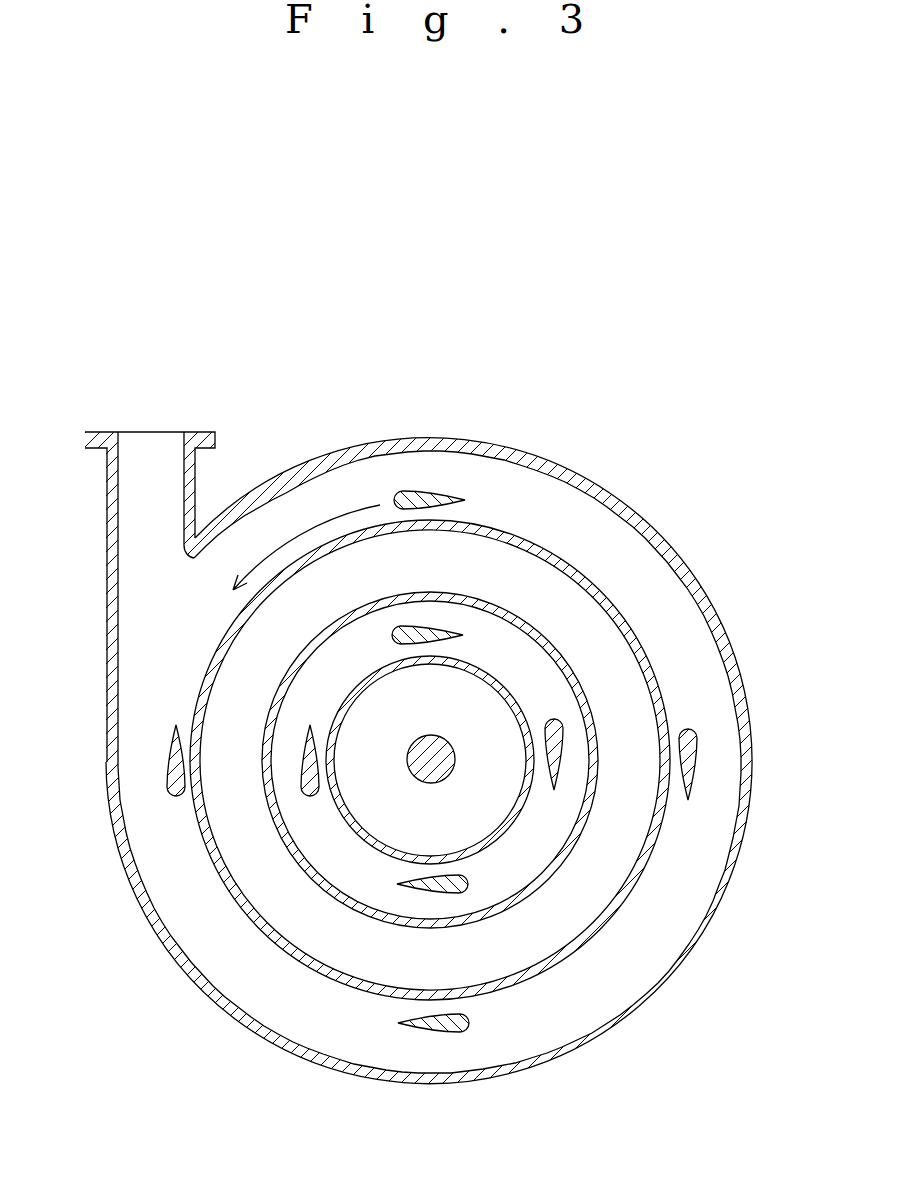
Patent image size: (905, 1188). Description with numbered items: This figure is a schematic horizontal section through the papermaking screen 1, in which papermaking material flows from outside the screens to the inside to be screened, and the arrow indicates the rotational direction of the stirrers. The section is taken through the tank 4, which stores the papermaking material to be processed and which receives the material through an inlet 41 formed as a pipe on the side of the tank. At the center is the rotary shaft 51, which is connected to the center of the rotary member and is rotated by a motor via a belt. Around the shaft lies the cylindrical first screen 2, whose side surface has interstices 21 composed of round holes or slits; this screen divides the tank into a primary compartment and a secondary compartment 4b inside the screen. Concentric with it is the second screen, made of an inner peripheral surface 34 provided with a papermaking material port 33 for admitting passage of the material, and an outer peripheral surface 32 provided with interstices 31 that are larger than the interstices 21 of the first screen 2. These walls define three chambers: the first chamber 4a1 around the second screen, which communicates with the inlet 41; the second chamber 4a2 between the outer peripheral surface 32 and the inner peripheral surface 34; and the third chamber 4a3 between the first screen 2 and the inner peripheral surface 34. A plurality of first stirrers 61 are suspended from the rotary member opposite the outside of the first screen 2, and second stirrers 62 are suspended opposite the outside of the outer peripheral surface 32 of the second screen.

The papermaking screen 1 is at (440, 348).
The first screen 2 is at (439, 739).
The interstices 21 is at (505, 693).
The interstices 31 is at (430, 733).
The outer peripheral surface 32 is at (588, 588).
The papermaking material port 33 is at (448, 747).
The inner peripheral surface 34 is at (595, 727).
The tank 4 is at (668, 548).
The inlet 41 is at (155, 455).
The first chamber 4a1 is at (197, 637).
The second chamber 4a2 is at (400, 962).
The third chamber 4a3 is at (385, 665).
The secondary compartment 4b is at (392, 785).
The rotary shaft 51 is at (437, 770).
The first stirrers 61 is at (310, 797).
The second stirrers 62 is at (466, 498).